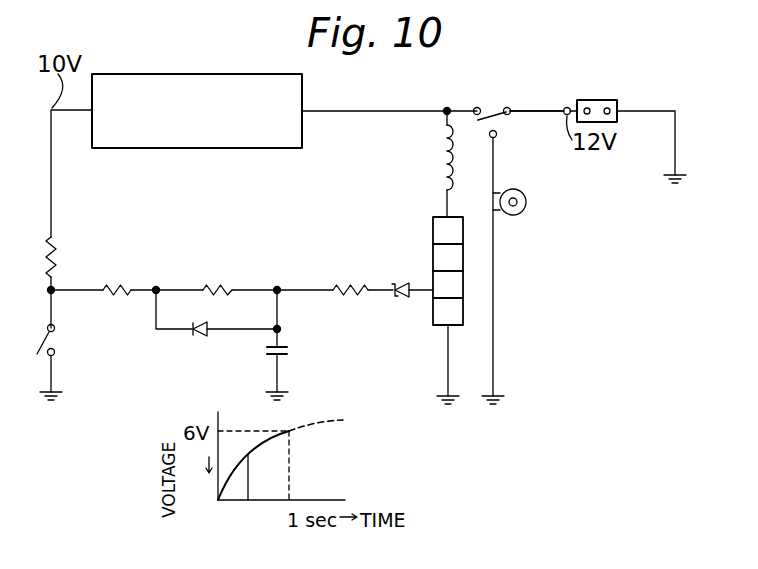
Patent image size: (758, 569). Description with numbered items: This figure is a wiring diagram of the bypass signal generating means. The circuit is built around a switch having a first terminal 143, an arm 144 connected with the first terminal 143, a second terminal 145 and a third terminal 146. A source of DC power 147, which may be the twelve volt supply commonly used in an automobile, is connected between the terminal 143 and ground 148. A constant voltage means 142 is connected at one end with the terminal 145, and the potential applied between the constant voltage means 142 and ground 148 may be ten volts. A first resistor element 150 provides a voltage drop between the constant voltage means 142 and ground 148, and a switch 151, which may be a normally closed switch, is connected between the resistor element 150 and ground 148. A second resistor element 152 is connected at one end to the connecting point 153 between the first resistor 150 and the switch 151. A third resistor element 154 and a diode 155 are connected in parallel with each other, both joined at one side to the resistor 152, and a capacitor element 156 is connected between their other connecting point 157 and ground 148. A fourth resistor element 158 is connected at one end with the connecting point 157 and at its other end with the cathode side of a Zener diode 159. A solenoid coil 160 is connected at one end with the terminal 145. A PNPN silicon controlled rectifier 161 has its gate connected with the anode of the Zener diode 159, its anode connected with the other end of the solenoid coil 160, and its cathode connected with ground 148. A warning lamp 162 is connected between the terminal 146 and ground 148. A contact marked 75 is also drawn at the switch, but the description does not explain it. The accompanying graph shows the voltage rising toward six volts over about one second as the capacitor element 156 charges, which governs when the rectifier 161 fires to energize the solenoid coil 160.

The constant voltage means 142 is at (192, 148).
The first terminal 143 is at (514, 113).
The arm 144 is at (491, 114).
The second terminal 145 is at (474, 107).
The switch contact 75 is at (509, 106).
The third terminal 146 is at (494, 139).
The source of DC power 147 is at (617, 118).
The ground 148 is at (51, 398).
The first resistor element 150 is at (55, 240).
The switch 151 is at (54, 331).
The second resistor element 152 is at (117, 287).
The connecting point 153 is at (55, 292).
The third resistor element 154 is at (218, 286).
The diode 155 is at (203, 338).
The capacitor element 156 is at (267, 350).
The connecting point 157 is at (277, 288).
The fourth resistor element 158 is at (347, 287).
The Zener diode 159 is at (404, 283).
The solenoid coil 160 is at (445, 158).
The PNPN silicon controlled rectifier 161 is at (463, 257).
The warning lamp 162 is at (526, 205).